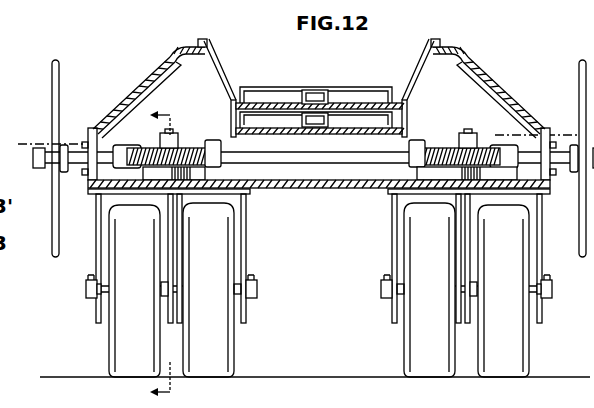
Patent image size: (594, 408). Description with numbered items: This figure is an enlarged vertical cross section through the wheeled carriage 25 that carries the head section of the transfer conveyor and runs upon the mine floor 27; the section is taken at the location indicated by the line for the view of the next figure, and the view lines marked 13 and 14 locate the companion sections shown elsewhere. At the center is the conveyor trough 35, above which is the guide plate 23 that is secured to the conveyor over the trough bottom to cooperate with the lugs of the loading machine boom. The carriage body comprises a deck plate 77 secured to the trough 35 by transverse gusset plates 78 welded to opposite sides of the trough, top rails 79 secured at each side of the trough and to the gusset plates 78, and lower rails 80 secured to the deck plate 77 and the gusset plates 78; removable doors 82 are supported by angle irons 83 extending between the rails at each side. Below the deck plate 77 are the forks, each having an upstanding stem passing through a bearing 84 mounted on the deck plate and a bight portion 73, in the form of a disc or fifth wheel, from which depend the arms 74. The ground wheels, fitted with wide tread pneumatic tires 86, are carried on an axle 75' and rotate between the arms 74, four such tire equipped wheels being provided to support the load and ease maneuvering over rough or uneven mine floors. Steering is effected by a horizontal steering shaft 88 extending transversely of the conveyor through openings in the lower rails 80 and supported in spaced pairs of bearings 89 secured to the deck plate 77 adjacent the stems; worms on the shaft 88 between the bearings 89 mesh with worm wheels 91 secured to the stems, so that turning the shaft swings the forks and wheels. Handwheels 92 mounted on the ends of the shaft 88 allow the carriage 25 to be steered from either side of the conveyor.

The Fig. 13 section line 13 is at (32, 141).
The Fig. 14 section line 14 is at (179, 253).
The guide plate 23 is at (378, 80).
The carriage 25 is at (88, 194).
The mine floor 27 is at (296, 377).
The trough 35 is at (222, 68).
The bight portion 73 is at (250, 193).
The arms 74 is at (168, 238).
The axle 75' is at (296, 290).
The deck plate 77 is at (317, 188).
The gusset plates 78 is at (176, 64).
The top rails 79 is at (196, 45).
The lower rails 80 is at (86, 167).
The removable doors 82 is at (146, 84).
The angle irons 83 is at (156, 90).
The bearings 84 is at (178, 178).
The pneumatic tires 86 is at (122, 352).
The steering shaft 88 is at (336, 146).
The bearings 89 is at (136, 146).
The worm wheels 91 is at (440, 150).
The handwheels 92 is at (51, 79).